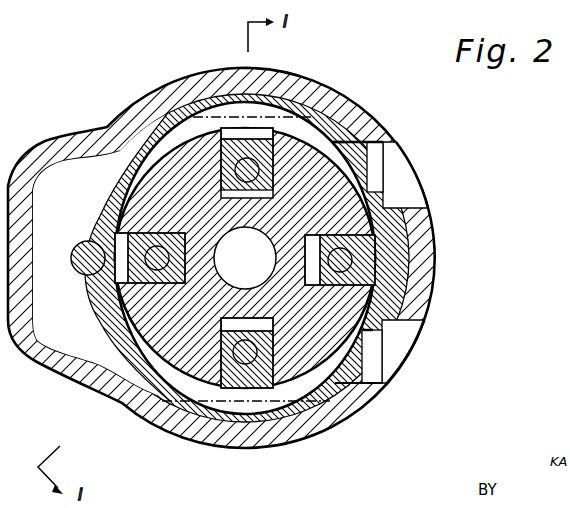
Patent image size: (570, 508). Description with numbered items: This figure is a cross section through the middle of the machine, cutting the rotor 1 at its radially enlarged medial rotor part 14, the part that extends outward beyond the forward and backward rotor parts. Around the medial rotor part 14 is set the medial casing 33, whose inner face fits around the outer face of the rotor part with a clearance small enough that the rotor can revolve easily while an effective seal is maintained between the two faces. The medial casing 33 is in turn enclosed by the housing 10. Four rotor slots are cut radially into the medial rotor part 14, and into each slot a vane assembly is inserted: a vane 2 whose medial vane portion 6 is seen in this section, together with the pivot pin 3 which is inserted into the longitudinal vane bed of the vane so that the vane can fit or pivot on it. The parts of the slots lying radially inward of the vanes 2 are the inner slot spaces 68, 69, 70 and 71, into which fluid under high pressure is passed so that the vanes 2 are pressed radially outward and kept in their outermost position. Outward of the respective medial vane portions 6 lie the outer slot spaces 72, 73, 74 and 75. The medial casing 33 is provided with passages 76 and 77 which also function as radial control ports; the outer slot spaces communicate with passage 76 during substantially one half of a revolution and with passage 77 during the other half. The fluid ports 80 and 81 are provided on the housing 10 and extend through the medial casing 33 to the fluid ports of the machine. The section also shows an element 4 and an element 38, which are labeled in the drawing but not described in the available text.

The rotor 1 is at (342, 182).
The vane 2 is at (266, 187).
The pivot pin 3 is at (260, 169).
The port passage 4 is at (330, 342).
The medial vane portion 6 is at (268, 153).
The housing 10 is at (80, 144).
The radially enlarged medial rotor part 14 is at (140, 130).
The medial casing 33 is at (98, 212).
The locating pin 38 is at (80, 248).
The inner slot space 68 is at (195, 243).
The inner slot space 69 is at (244, 252).
The inner slot space 70 is at (307, 242).
The inner slot space 71 is at (253, 328).
The outer slot space 72 is at (118, 269).
The outer slot space 73 is at (266, 118).
The outer slot space 74 is at (408, 263).
The outer slot space 75 is at (250, 395).
The passage 76 is at (222, 112).
The passage 77 is at (207, 408).
The fluid port 80 is at (372, 178).
The fluid port 81 is at (377, 378).